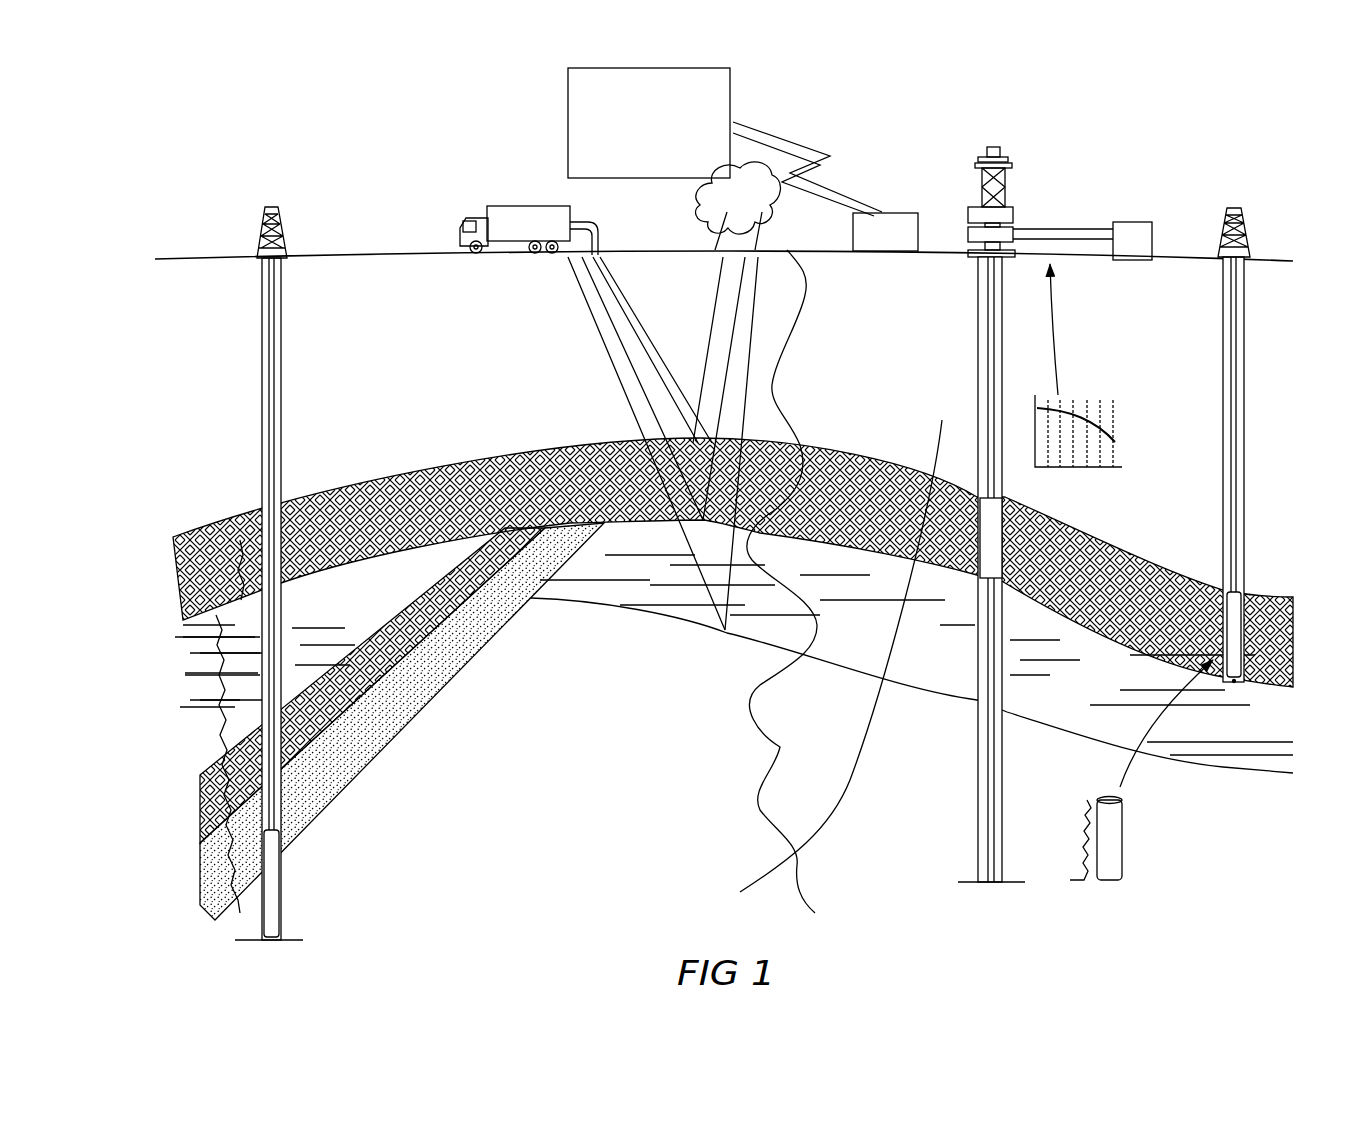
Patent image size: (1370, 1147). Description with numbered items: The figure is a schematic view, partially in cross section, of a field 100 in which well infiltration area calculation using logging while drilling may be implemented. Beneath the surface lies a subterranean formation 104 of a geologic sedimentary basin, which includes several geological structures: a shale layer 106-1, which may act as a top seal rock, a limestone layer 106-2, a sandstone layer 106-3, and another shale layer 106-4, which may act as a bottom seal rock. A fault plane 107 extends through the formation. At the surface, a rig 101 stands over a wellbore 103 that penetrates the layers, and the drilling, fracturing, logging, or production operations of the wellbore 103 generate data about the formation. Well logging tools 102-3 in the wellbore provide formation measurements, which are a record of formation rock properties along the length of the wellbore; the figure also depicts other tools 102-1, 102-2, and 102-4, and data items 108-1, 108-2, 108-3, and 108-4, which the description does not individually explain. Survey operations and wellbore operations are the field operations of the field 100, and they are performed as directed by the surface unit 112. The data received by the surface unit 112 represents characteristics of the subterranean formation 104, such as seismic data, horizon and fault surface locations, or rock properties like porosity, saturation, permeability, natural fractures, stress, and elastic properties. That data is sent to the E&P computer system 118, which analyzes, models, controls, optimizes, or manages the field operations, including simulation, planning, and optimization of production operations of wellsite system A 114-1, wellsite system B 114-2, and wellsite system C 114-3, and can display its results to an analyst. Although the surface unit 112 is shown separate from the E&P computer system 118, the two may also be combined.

The field 100 is at (253, 141).
The rig 101 is at (253, 206).
The seismic truck / surface unit 102-1 is at (495, 207).
The downhole tool 102-2 is at (1220, 689).
The well logging tools 102-3 is at (282, 887).
The production unit / reservoir sensor 102-4 is at (1093, 590).
The wellbore 103 is at (292, 369).
The subterranean formation 104 is at (595, 716).
The shale layer 106-1 is at (417, 513).
The limestone layer 106-2 is at (338, 618).
The sandstone layer 106-3 is at (400, 636).
The shale layer 106-4 is at (440, 687).
The fault plane 107 is at (936, 441).
The seismic data plot 108-1 is at (780, 755).
The core sample 108-2 is at (1085, 813).
The well log 108-3 is at (202, 764).
The production decline curve 108-4 is at (1080, 470).
The surface unit 112 is at (871, 249).
The wellsite system A 114-1 is at (297, 231).
The wellsite system B 114-2 is at (1005, 124).
The wellsite system C 114-3 is at (1210, 204).
The E&P computer system 118 is at (634, 175).